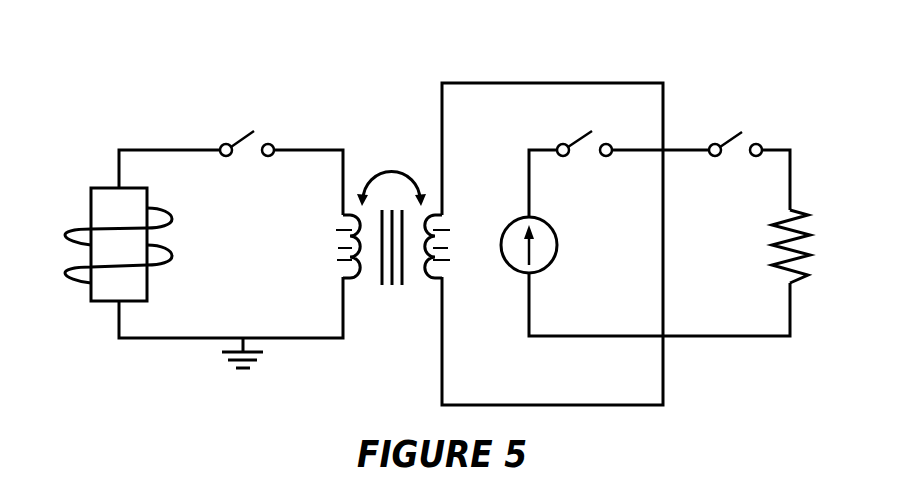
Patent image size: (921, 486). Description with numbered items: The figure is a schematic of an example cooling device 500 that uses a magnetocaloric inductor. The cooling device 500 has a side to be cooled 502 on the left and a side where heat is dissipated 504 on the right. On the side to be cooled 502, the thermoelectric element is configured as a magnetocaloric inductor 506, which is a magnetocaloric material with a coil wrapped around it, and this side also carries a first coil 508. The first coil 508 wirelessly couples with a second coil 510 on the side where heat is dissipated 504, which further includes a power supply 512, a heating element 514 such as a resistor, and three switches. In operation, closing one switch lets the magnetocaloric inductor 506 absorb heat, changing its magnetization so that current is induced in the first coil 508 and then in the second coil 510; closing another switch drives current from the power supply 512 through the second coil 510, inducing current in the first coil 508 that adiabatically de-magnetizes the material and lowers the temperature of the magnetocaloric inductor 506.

The cooling device 500 is at (462, 46).
The side to be cooled 502 is at (92, 130).
The side where heat is dissipated 504 is at (795, 101).
The magnetocaloric inductor 506 is at (66, 267).
The first coil 508 is at (348, 243).
The second coil 510 is at (447, 241).
The power supply 512 is at (501, 246).
The heating element 514 is at (803, 243).